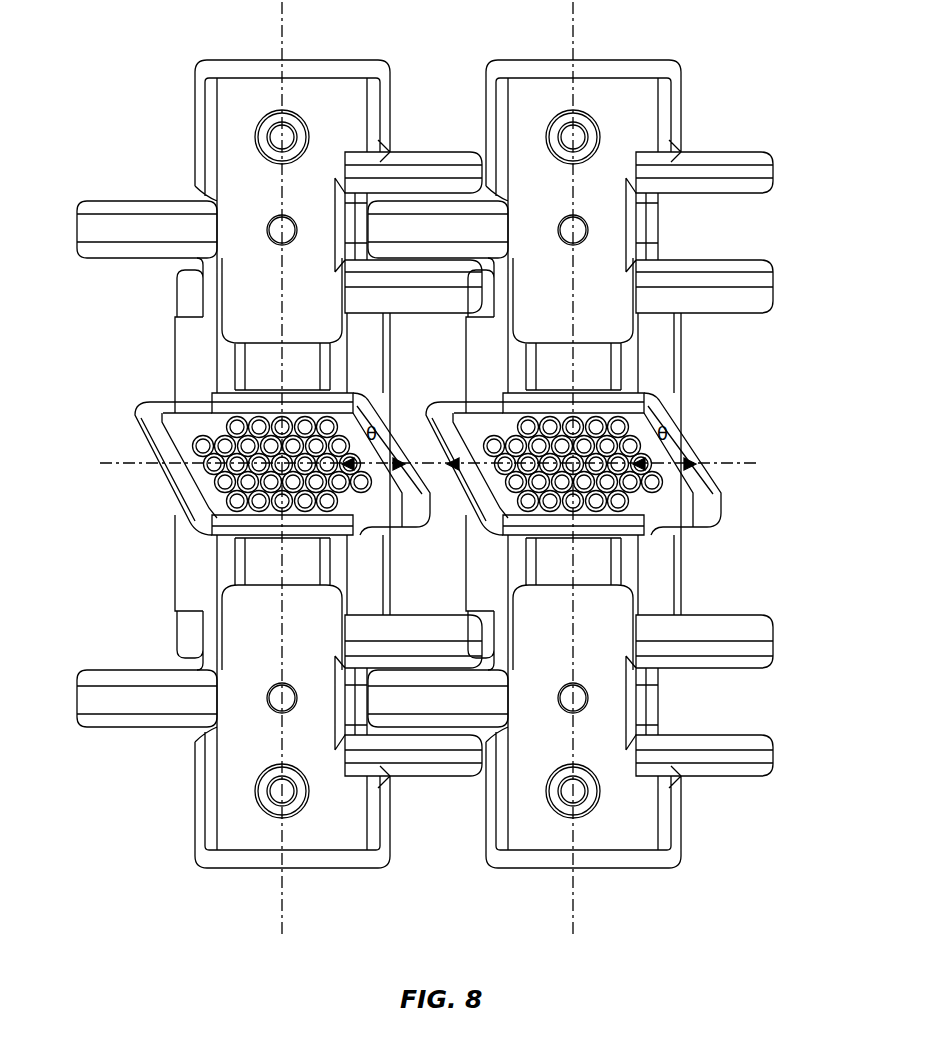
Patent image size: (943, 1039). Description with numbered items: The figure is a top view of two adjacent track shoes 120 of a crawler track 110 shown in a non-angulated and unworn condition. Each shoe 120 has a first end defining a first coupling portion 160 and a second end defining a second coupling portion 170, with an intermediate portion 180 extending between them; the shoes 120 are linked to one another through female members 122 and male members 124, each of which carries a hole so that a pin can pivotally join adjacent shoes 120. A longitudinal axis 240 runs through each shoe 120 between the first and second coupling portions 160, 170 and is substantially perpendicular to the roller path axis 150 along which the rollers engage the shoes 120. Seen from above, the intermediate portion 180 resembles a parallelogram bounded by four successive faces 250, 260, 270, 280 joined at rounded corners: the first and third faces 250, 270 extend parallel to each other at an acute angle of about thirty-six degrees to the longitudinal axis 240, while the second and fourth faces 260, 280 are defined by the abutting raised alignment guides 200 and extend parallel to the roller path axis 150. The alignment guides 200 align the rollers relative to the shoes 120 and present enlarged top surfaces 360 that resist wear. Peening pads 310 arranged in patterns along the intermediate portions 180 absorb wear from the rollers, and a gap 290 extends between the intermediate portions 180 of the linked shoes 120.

The crawler track 110 is at (450, 484).
The shoe 120 is at (362, 68).
The female member 122 is at (402, 172).
The male member 124 is at (100, 218).
The roller path axis 150 is at (744, 463).
The first coupling portion 160 is at (462, 157).
The second coupling portion 170 is at (745, 778).
The intermediate portion 180 is at (176, 480).
The alignment guide 200 is at (300, 372).
The longitudinal axis 240 is at (282, 890).
The first face 250 is at (400, 450).
The second face 260 is at (257, 524).
The third face 270 is at (165, 462).
The fourth face 280 is at (243, 400).
The gap 290 is at (455, 447).
The peening pad 310 is at (215, 437).
The top surface 360 is at (263, 363).